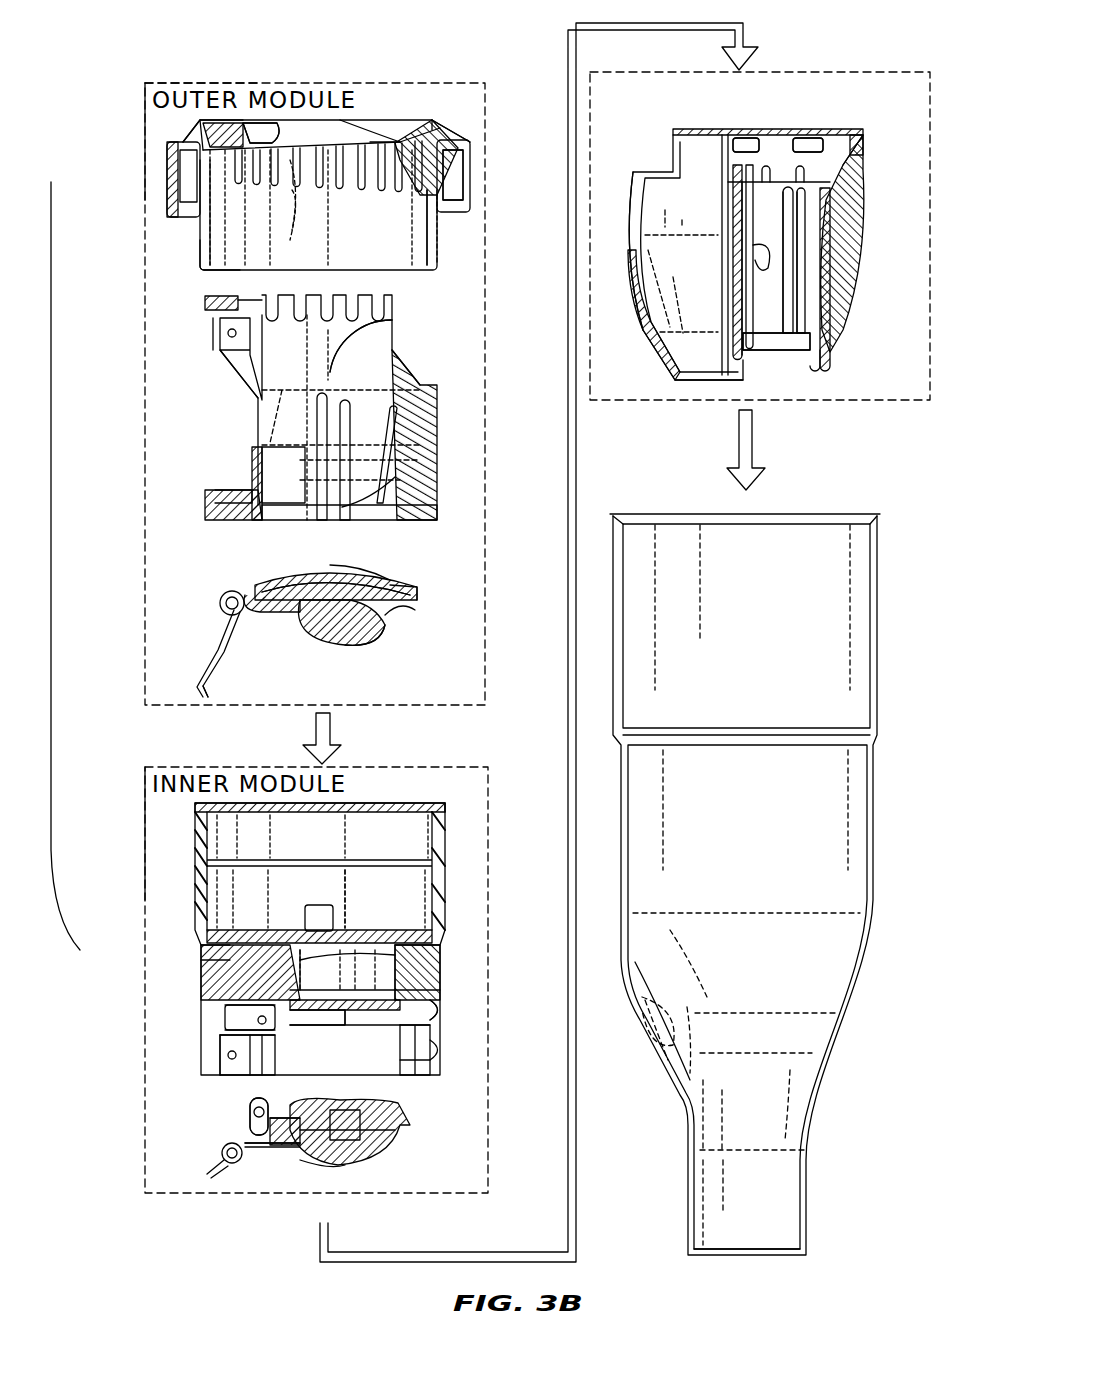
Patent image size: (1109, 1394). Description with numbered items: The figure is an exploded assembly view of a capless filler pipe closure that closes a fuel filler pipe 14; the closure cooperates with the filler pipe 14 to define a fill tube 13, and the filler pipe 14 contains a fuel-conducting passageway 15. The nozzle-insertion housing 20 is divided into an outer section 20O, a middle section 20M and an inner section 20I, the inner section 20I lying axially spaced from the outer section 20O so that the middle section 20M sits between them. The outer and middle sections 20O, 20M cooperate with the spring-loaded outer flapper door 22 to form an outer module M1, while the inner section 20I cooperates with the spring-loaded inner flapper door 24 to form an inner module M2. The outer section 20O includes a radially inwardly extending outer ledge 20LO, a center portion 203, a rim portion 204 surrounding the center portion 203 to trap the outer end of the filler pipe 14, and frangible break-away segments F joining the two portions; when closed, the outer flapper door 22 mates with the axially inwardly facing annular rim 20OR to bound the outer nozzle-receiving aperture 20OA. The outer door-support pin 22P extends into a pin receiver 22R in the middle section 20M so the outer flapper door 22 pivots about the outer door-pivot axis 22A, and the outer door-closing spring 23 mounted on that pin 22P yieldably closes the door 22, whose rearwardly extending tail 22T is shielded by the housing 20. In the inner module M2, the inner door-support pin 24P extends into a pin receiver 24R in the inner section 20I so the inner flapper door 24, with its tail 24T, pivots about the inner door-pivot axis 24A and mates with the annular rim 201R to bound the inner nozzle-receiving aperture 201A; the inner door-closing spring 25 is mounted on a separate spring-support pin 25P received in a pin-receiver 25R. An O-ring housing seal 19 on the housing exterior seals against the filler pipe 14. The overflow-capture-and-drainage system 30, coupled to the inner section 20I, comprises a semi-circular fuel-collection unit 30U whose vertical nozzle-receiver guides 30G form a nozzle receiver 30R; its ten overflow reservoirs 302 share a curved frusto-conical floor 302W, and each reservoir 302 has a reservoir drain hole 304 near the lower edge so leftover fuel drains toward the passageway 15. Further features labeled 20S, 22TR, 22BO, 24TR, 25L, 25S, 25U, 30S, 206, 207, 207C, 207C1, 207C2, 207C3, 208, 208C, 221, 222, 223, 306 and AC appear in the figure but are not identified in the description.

The fill tube 13 is at (130, 128).
The fuel filler pipe 14 is at (885, 692).
The fuel-conducting passageway 15 is at (770, 1205).
The O-ring housing seal 19 is at (445, 987).
The nozzle-insertion housing 20 is at (76, 408).
The outer section 20O is at (170, 230).
The middle section 20M is at (232, 393).
The inner section 20I is at (197, 962).
The inner cap sidewall 20S is at (445, 805).
The outer ledge 20LO is at (255, 145).
The outer nozzle-receiving aperture 20OA is at (380, 135).
The annular rim 20OR is at (297, 170).
The outer flapper door 22 is at (283, 568).
The rearwardly extending tail 22T is at (285, 585).
The outer door-support pin 22P is at (222, 600).
The outer door-pivot axis 22A is at (238, 618).
The pin receiver 22R is at (218, 365).
The top rail 22TR is at (212, 118).
The bottom opening 22BO is at (258, 196).
The outer door-closing spring 23 is at (190, 668).
The inner flapper door 24 is at (408, 1113).
The inner door-pivot axis 24A is at (262, 1112).
The inner door-support pin 24P is at (250, 1125).
The pin receiver 24R is at (200, 1020).
The rearwardly extending tail 24T is at (280, 1165).
The inner valve track 24TR is at (240, 1105).
The inner door-closing spring 25 is at (275, 1160).
The inner lever lower portion 25L is at (305, 1165).
The spring-support pin 25P is at (222, 1153).
The pin-receiver 25R is at (215, 1072).
The inner lever spring 25S is at (208, 1180).
The inner lever upper portion 25U is at (236, 1168).
The overflow-capture-and-drainage system 30 is at (826, 72).
The nozzle-receiver guides 30G is at (770, 275).
The nozzle receiver 30R is at (800, 278).
The drainage shell 30S is at (640, 318).
The semi-circular fuel-collection unit 30U is at (718, 315).
The inner nozzle-receiving aperture 201A is at (430, 1030).
The annular rim 201R is at (344, 1036).
The center portion 203 is at (440, 255).
The rim portion 204 is at (458, 185).
The inner cap thread 206 is at (78, 1058).
The inner cap channel 207 is at (137, 992).
The channel 207C is at (372, 965).
The channel first section 207C1 is at (398, 962).
The channel second section 207C2 is at (420, 952).
The channel third section 207C3 is at (430, 1005).
The inner cap lower recess 208 is at (225, 1062).
The lower recess channel 208C is at (400, 1082).
The seal upper surface 221 is at (355, 560).
The seal lower portion 222 is at (365, 640).
The seal edge 223 is at (415, 575).
The overflow reservoir 302 is at (858, 150).
The curved frusto-conical floor 302W is at (765, 352).
The reservoir drain hole 304 is at (835, 372).
The drainage wall 306 is at (850, 235).
The air channel AC is at (350, 118).
The break-away segments F is at (455, 135).
The outer module M1 is at (145, 168).
The inner module M2 is at (145, 790).